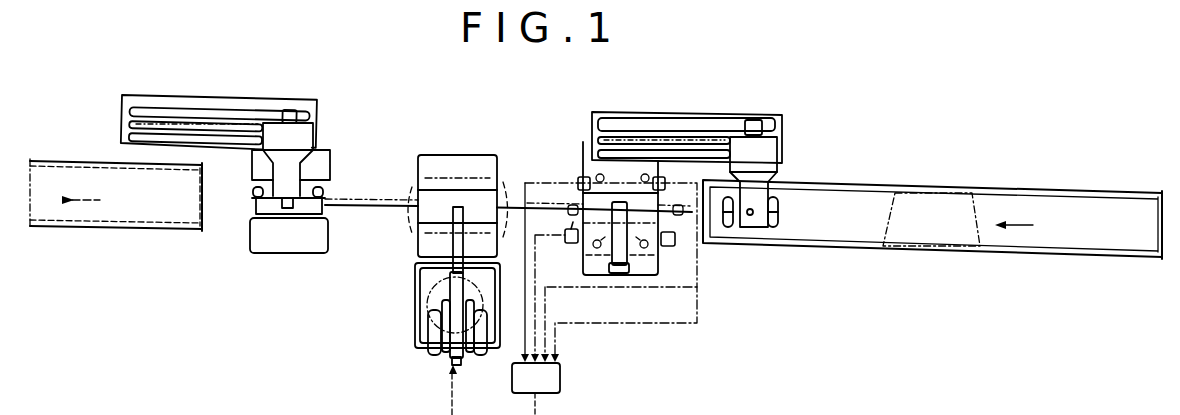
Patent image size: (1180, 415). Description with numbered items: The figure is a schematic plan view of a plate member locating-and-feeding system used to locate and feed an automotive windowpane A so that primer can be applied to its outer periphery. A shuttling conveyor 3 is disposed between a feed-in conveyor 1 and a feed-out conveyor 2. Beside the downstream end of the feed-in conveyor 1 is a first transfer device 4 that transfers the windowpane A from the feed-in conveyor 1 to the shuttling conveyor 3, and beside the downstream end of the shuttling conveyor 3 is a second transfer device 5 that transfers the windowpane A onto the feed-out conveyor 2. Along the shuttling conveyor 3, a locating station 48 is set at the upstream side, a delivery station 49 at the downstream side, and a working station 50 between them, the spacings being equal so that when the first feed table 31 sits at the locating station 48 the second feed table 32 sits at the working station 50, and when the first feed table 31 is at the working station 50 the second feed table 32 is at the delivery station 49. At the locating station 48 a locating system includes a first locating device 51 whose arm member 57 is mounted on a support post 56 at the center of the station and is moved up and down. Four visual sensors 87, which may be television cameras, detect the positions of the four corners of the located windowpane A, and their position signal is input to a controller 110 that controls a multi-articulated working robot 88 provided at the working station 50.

The feed-in conveyor 1 is at (1029, 198).
The feed-out conveyor 2 is at (51, 172).
The shuttling conveyor 3 is at (364, 200).
The first transfer device 4 is at (732, 112).
The second transfer device 5 is at (235, 94).
The first feed table 31 is at (645, 218).
The second feed table 32 is at (436, 198).
The locating station 48 is at (637, 293).
The delivery station 49 is at (243, 237).
The working station 50 is at (403, 246).
The first locating device 51 is at (604, 256).
The support post 56 is at (618, 274).
The arm member 57 is at (660, 262).
The visual sensor 87 is at (583, 177).
The multi-articulated working robot 88 is at (416, 324).
The controller 110 is at (550, 393).
The windowpane A is at (477, 185).